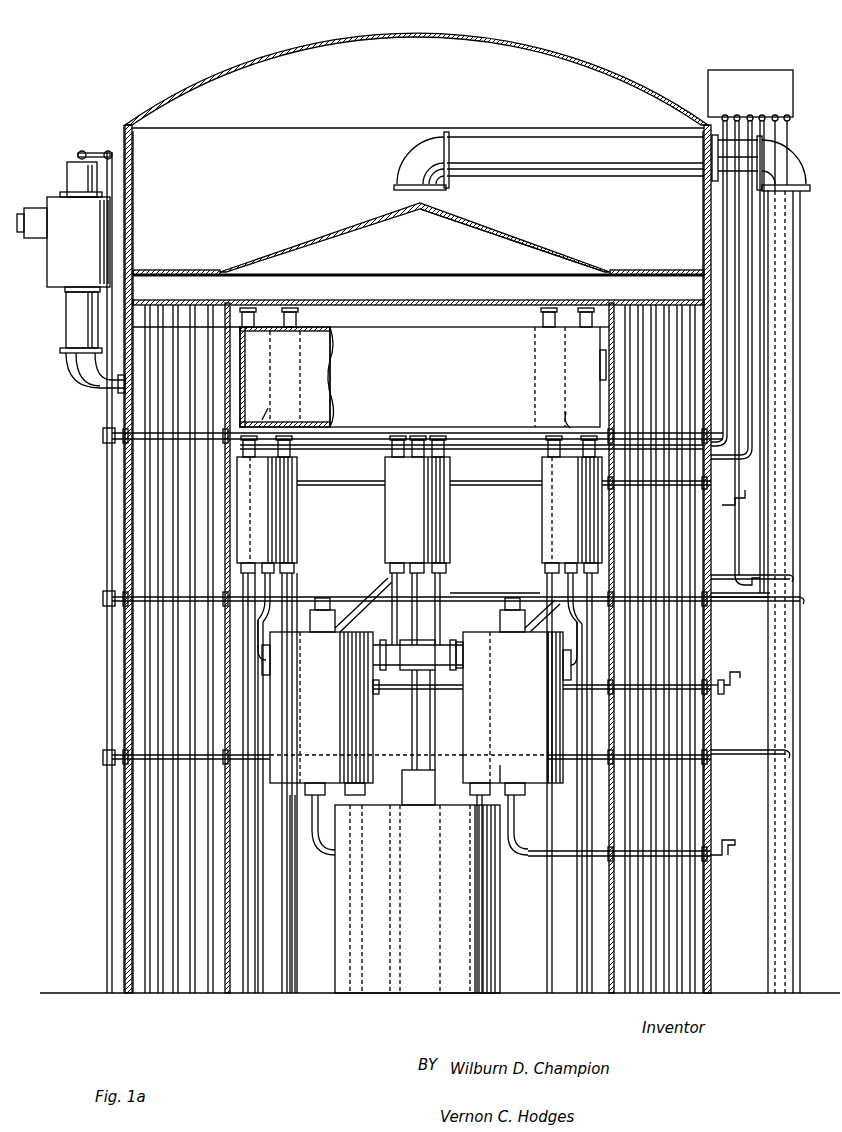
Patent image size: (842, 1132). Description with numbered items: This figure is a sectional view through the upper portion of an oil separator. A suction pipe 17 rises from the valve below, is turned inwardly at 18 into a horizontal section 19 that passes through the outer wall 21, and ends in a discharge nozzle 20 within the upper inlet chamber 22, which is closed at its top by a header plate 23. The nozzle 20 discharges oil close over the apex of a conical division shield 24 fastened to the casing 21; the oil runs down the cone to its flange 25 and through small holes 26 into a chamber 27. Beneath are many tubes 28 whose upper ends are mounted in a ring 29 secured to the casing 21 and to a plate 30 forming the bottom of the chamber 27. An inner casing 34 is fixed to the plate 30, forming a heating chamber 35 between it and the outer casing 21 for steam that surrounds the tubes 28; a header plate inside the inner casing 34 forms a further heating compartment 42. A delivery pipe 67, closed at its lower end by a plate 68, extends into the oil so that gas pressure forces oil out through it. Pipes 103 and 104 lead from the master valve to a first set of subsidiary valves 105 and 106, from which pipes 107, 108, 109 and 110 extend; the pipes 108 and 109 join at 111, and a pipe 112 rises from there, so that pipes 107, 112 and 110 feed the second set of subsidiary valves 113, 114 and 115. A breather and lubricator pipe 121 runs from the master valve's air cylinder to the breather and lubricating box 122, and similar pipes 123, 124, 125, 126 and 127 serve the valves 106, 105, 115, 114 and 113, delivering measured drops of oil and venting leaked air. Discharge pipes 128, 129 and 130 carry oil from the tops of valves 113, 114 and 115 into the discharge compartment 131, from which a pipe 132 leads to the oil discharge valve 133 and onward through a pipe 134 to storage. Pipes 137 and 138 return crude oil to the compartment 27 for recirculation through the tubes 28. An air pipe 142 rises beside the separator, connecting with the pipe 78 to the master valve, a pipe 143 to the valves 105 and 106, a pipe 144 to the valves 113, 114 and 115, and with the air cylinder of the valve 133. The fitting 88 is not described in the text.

The suction pipe 17 is at (745, 591).
The inward turn of suction pipe 18 is at (790, 165).
The horizontal section of suction pipe 19 is at (562, 155).
The discharge nozzle 20 is at (425, 143).
The outer wall 21 is at (128, 705).
The upper inlet chamber 22 is at (192, 150).
The header plate 23 is at (342, 47).
The conical division shield 24 is at (329, 234).
The flange 25 is at (590, 262).
The holes 26 is at (178, 270).
The chamber 27 is at (215, 285).
The tubes 28 is at (210, 514).
The ring 29 is at (195, 300).
The plate 30 is at (372, 300).
The inner casing 34 is at (228, 995).
The heating chamber 35 is at (135, 818).
The heating compartment 42 is at (268, 978).
The delivery pipe 67 is at (562, 858).
The plate 68 is at (410, 899).
The pipe 78 is at (410, 778).
The connection 88 is at (727, 850).
The pipe 103 is at (335, 845).
The pipe 104 is at (515, 862).
The subsidiary valve 105 is at (321, 795).
The subsidiary valve 106 is at (513, 795).
The pipe 107 is at (276, 658).
The pipe 108 is at (365, 690).
The pipe 109 is at (463, 653).
The pipe 110 is at (565, 665).
The junction 111 is at (418, 670).
The pipe 112 is at (420, 624).
The subsidiary valve 113 is at (278, 518).
The subsidiary valve 114 is at (426, 505).
The subsidiary valve 115 is at (565, 527).
The breather and lubricator pipe 121 is at (748, 755).
The breather and lubricating box 122 is at (745, 70).
The pipe 123 is at (731, 653).
The pipe 124 is at (733, 566).
The pipe 125 is at (748, 460).
The pipe 126 is at (740, 186).
The pipe 127 is at (725, 376).
The discharge pipe 128 is at (270, 420).
The discharge pipe 129 is at (410, 430).
The discharge pipe 130 is at (566, 426).
The discharge compartment 131 is at (467, 377).
The pipe 132 is at (90, 383).
The oil discharge valve 133 is at (63, 277).
The pipe 134 is at (35, 205).
The pipe 137 is at (288, 333).
The pipe 138 is at (585, 326).
The air pipe 142 is at (107, 916).
The pipe 143 is at (128, 606).
The pipe 144 is at (125, 452).